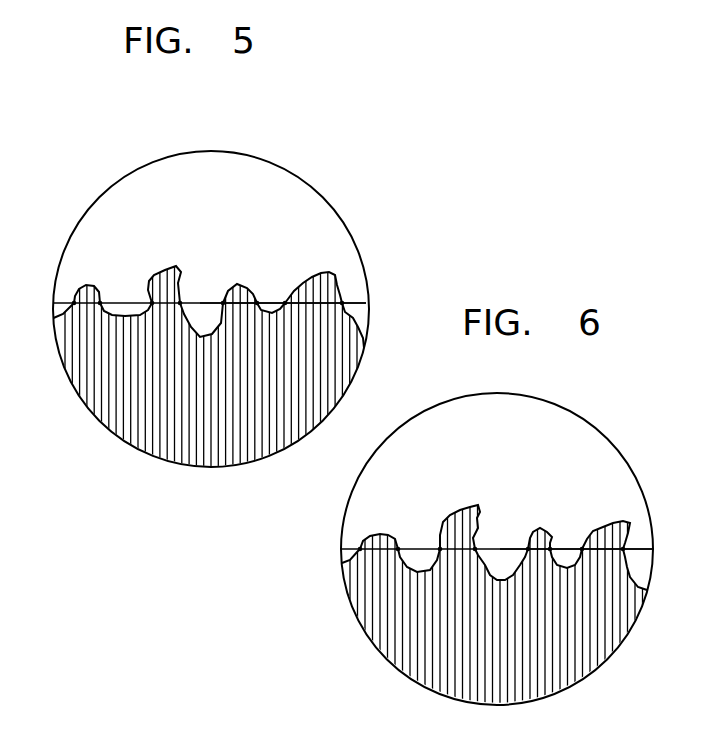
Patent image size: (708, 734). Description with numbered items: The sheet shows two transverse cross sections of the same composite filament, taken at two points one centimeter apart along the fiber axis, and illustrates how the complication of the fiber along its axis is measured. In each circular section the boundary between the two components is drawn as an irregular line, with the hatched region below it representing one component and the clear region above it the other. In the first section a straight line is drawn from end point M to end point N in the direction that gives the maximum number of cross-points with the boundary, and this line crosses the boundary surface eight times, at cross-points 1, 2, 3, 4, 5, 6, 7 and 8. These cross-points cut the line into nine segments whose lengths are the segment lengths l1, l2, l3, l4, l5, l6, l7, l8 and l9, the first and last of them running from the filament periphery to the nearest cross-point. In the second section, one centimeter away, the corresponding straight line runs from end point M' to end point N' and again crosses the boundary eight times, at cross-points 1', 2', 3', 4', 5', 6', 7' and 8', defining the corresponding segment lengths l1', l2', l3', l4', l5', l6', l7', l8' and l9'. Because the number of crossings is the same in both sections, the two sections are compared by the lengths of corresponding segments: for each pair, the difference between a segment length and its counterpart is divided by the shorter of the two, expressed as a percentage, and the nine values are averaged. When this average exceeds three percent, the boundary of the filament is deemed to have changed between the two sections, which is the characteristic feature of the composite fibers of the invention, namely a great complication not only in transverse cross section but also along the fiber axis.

In FIG. 5, the straight line end point M is at (194, 300).
In FIG. 5, the straight line end point N is at (294, 308).
In FIG. 5, the cross-point 1 is at (74, 312).
In FIG. 5, the cross-point 2 is at (105, 296).
In FIG. 5, the cross-point 3 is at (155, 315).
In FIG. 5, the cross-point 4 is at (185, 297).
In FIG. 5, the cross-point 5 is at (219, 298).
In FIG. 5, the cross-point 6 is at (261, 298).
In FIG. 5, the cross-point 7 is at (290, 312).
In FIG. 5, the cross-point 8 is at (340, 316).
In FIG. 5, the segment length l1 is at (66, 290).
In FIG. 5, the segment length l2 is at (87, 309).
In FIG. 5, the segment length l3 is at (126, 297).
In FIG. 5, the segment length l4 is at (164, 284).
In FIG. 5, the segment length l5 is at (201, 320).
In FIG. 5, the segment length l6 is at (240, 309).
In FIG. 5, the segment length l7 is at (272, 294).
In FIG. 5, the segment length l8 is at (313, 291).
In FIG. 5, the segment length l9 is at (353, 311).
In FIG. 6, the straight line end point M' is at (485, 549).
In FIG. 6, the straight line end point N' is at (588, 552).
In FIG. 6, the cross-point 1' is at (359, 558).
In FIG. 6, the cross-point 2' is at (404, 537).
In FIG. 6, the cross-point 3' is at (445, 560).
In FIG. 6, the cross-point 4' is at (482, 538).
In FIG. 6, the cross-point 5' is at (521, 538).
In FIG. 6, the cross-point 6' is at (558, 538).
In FIG. 6, the cross-point 7' is at (583, 537).
In FIG. 6, the cross-point 8' is at (618, 558).
In FIG. 6, the segment length l1' is at (351, 540).
In FIG. 6, the segment length l2' is at (379, 555).
In FIG. 6, the segment length l3' is at (419, 546).
In FIG. 6, the segment length l4' is at (460, 527).
In FIG. 6, the segment length l5' is at (501, 564).
In FIG. 6, the segment length l6' is at (540, 555).
In FIG. 6, the segment length l7' is at (567, 570).
In FIG. 6, the segment length l8' is at (606, 535).
In FIG. 6, the segment length l9' is at (635, 569).